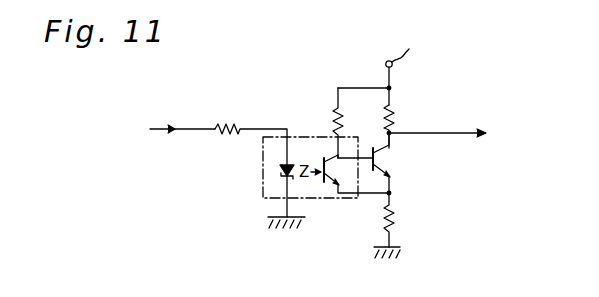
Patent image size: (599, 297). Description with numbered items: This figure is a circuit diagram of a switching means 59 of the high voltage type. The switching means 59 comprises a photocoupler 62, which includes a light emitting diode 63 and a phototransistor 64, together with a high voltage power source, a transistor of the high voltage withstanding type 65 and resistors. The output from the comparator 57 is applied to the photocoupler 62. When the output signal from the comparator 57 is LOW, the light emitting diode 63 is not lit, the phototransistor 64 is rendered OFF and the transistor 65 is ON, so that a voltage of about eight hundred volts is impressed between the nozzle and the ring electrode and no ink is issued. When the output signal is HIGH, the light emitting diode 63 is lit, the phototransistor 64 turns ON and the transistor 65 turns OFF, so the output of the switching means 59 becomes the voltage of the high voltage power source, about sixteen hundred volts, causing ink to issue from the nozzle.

The comparator 57 is at (198, 139).
The switching means 59 is at (317, 102).
The photocoupler 62 is at (262, 186).
The light emitting diode 63 is at (281, 168).
The phototransistor 64 is at (320, 178).
The transistor of the high voltage withstanding type 65 is at (389, 157).